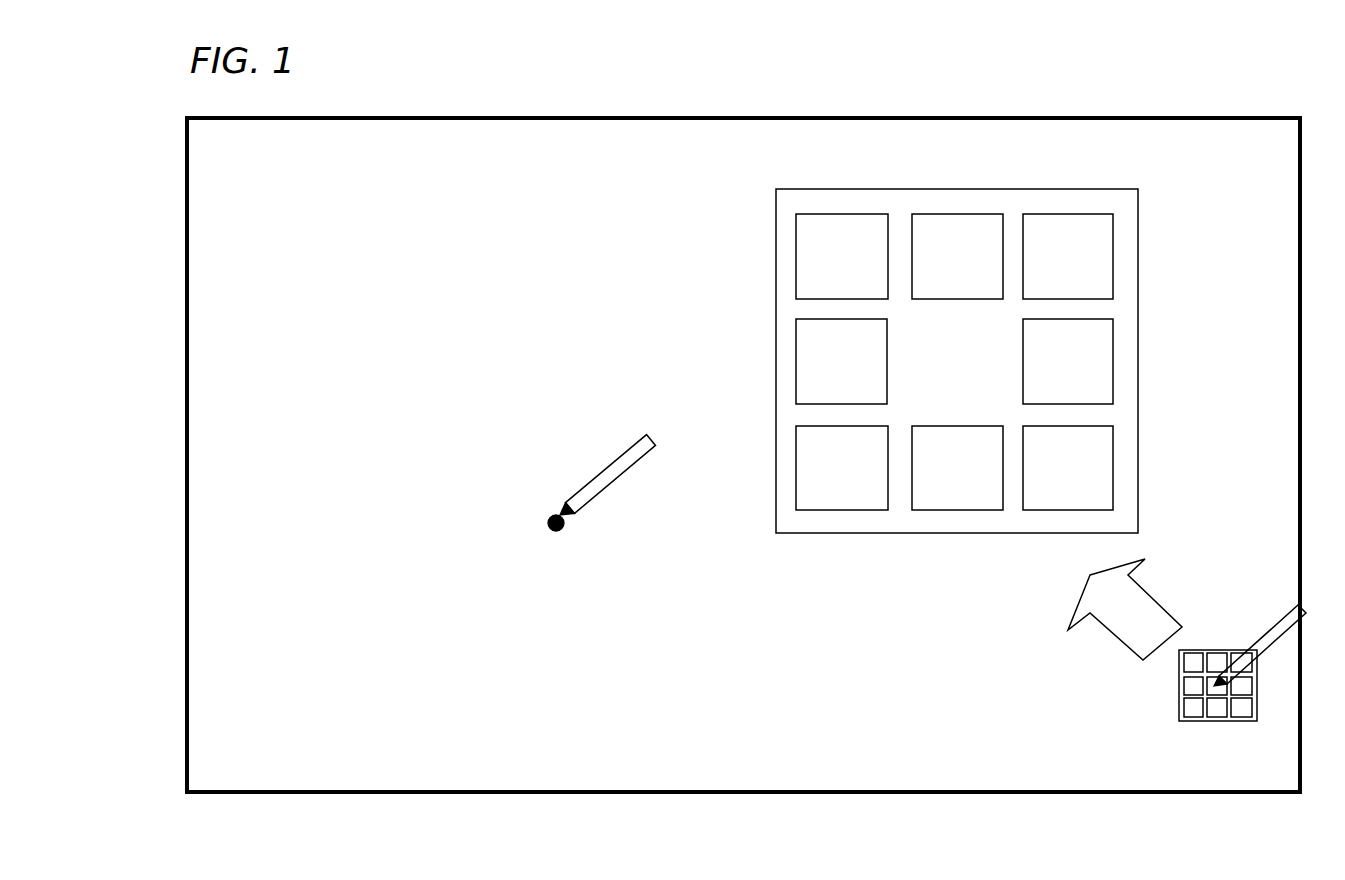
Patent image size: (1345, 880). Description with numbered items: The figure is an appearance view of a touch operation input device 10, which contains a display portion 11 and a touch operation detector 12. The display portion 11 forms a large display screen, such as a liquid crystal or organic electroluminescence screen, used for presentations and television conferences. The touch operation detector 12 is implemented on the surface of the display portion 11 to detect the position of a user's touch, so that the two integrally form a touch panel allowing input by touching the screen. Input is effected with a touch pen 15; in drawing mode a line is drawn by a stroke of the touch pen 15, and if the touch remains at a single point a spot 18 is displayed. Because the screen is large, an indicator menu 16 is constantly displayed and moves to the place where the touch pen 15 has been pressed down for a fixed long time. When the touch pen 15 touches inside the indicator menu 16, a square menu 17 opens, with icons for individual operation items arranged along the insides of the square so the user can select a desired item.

The touch operation input device 10 is at (1164, 42).
The display portion 11 is at (958, 118).
The touch operation detector 12 is at (585, 198).
The touch pen 15 is at (606, 462).
The indicator menu 16 is at (1181, 697).
The square menu 17 is at (1138, 348).
The spot 18 is at (548, 530).